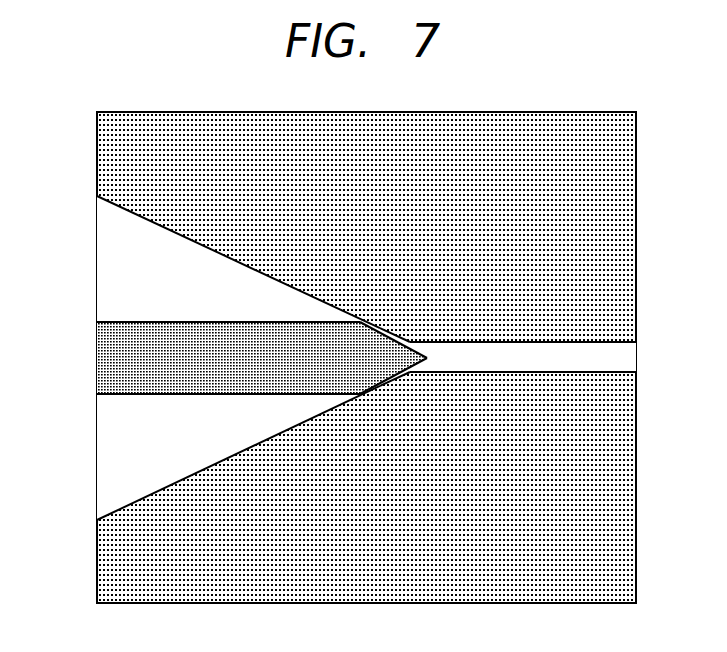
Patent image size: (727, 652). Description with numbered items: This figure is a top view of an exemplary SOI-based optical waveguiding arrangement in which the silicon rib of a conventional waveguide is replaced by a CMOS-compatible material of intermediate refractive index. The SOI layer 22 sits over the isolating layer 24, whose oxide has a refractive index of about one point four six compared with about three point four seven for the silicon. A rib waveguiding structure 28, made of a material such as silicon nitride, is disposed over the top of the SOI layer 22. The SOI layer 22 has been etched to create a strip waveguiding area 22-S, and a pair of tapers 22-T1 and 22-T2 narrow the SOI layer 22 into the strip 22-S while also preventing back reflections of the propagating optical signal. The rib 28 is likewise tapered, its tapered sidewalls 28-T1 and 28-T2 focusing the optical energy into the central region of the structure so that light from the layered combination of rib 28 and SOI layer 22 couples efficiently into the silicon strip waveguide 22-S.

The SOI layer 22 is at (108, 278).
The isolating layer 24 is at (617, 494).
The rib waveguiding structure 28 is at (112, 356).
The strip waveguiding area 22-S is at (527, 342).
The taper 22-T1 is at (390, 330).
The taper 22-T2 is at (390, 388).
The tapered sidewall 28-T1 is at (370, 322).
The tapered sidewall 28-T2 is at (367, 392).